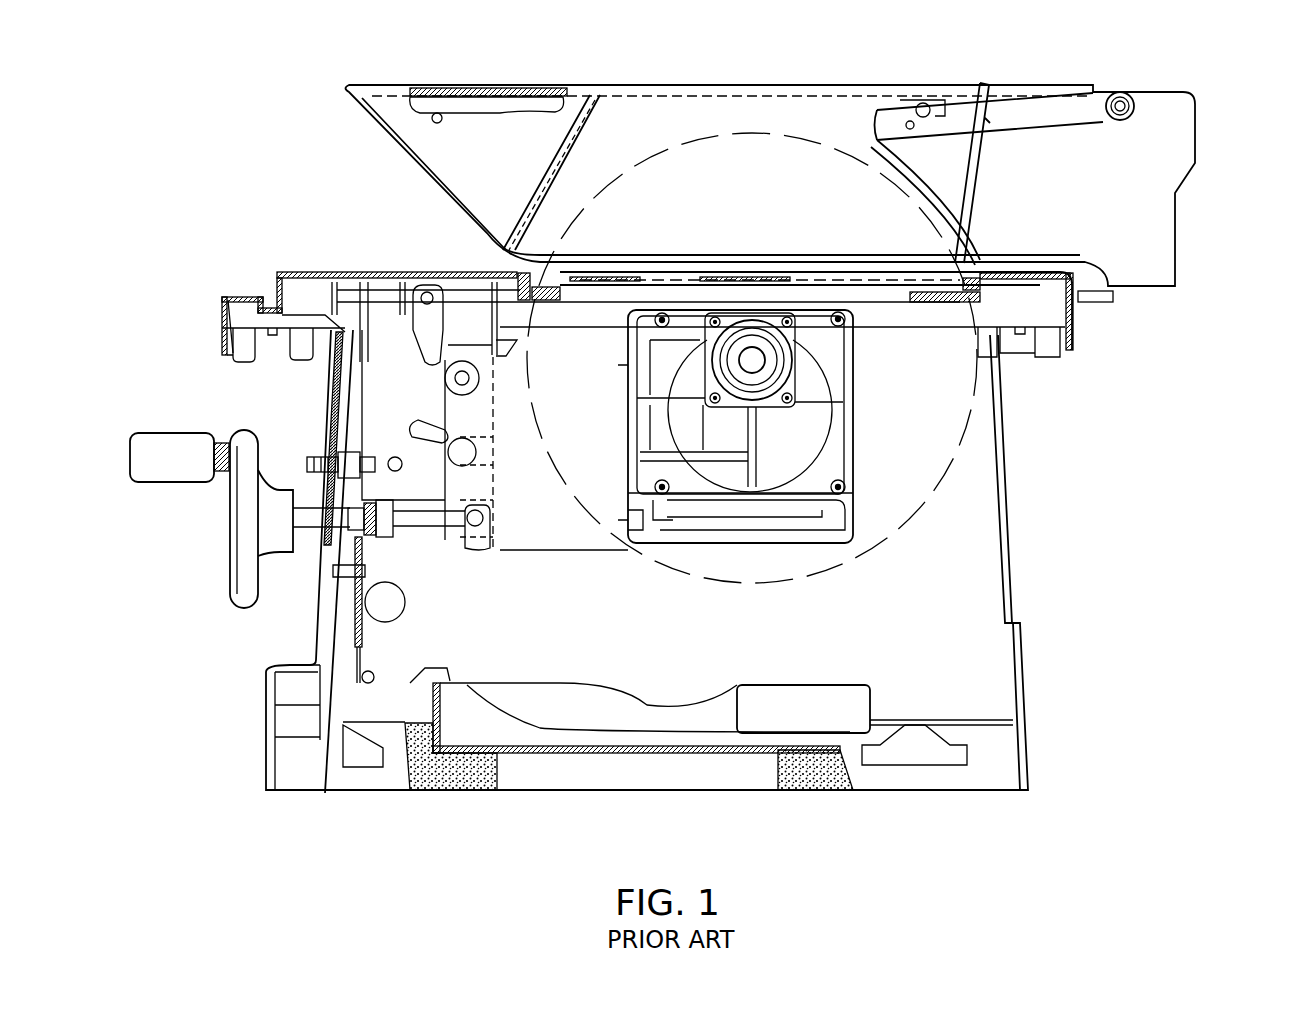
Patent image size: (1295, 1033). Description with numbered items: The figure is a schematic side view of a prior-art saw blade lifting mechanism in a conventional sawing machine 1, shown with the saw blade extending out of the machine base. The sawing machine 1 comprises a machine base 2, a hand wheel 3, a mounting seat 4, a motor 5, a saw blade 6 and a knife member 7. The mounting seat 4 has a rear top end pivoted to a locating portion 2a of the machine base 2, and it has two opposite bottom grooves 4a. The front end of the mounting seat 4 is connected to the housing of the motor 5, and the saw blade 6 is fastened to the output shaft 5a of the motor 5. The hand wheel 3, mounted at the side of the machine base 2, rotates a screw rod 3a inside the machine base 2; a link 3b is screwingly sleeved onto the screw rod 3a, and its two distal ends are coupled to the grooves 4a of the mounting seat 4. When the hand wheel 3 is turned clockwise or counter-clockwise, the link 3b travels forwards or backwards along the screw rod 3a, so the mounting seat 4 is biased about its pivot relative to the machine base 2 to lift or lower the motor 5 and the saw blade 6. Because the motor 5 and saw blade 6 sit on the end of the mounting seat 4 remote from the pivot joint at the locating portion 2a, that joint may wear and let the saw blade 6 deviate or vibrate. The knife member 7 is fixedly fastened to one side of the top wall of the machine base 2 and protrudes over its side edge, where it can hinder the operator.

The sawing machine 1 is at (1192, 69).
The machine base 2 is at (1010, 511).
The locating portion 2a is at (462, 360).
The hand wheel 3 is at (222, 538).
The screw rod 3a is at (420, 535).
The link 3b is at (473, 518).
The mounting seat 4 is at (562, 535).
The bottom grooves 4a is at (483, 545).
The motor 5 is at (680, 545).
The output shaft 5a is at (767, 358).
The saw blade 6 is at (752, 587).
The knife member 7 is at (1125, 222).